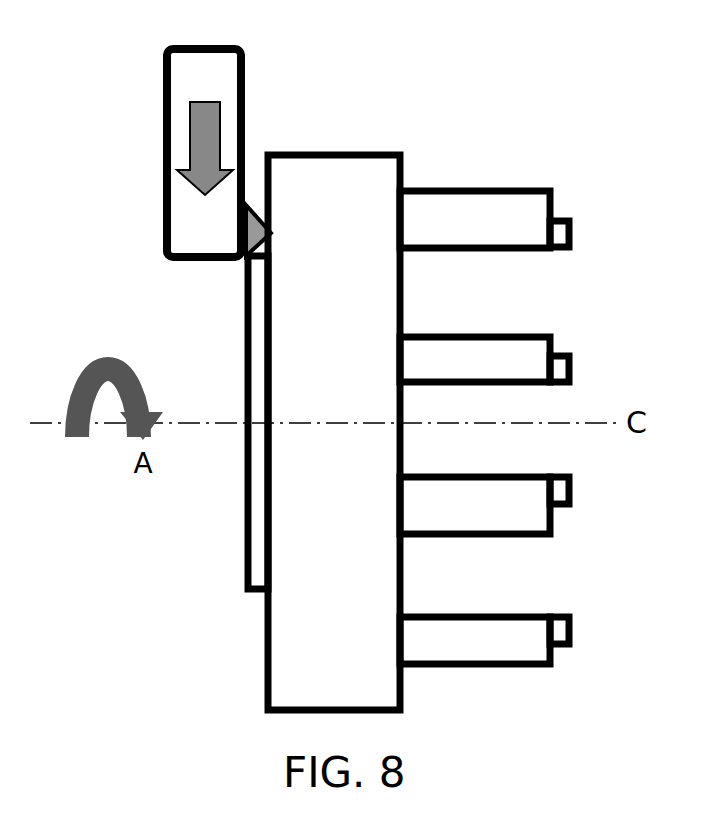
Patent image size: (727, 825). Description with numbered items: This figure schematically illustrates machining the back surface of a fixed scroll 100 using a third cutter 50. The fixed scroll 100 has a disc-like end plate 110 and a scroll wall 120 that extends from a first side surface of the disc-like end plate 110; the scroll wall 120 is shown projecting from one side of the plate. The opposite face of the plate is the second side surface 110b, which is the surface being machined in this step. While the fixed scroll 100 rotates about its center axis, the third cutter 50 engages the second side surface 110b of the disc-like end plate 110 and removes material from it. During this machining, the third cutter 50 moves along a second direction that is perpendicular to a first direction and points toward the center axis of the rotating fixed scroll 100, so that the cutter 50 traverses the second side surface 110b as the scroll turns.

The third cutter 50 is at (178, 78).
The fixed scroll 100 is at (302, 414).
The disc-like end plate 110 is at (340, 187).
The second side surface 110b is at (245, 300).
The scroll wall 120 is at (463, 217).